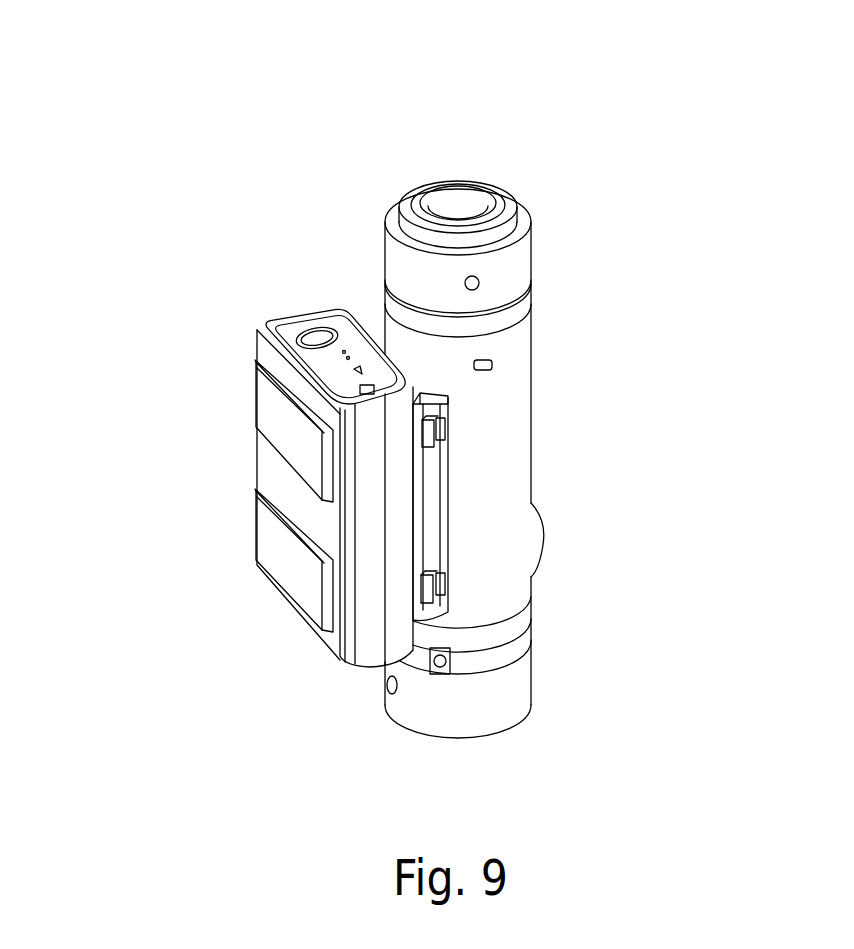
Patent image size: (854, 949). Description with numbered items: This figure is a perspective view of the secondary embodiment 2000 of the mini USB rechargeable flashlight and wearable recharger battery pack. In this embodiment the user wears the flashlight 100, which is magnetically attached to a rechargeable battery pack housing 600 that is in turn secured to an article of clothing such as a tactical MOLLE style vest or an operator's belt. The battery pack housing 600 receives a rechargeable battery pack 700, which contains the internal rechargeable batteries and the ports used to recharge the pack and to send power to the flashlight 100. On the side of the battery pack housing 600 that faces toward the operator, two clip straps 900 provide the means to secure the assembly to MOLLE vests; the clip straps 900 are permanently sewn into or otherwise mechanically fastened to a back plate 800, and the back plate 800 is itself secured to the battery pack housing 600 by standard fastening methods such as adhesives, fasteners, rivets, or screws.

The secondary embodiment 2000 is at (553, 116).
The flashlight 100 is at (480, 459).
The battery pack housing 600 is at (375, 542).
The rechargeable battery pack 700 is at (353, 358).
The back plate 800 is at (298, 502).
The clip straps 900 is at (281, 428).